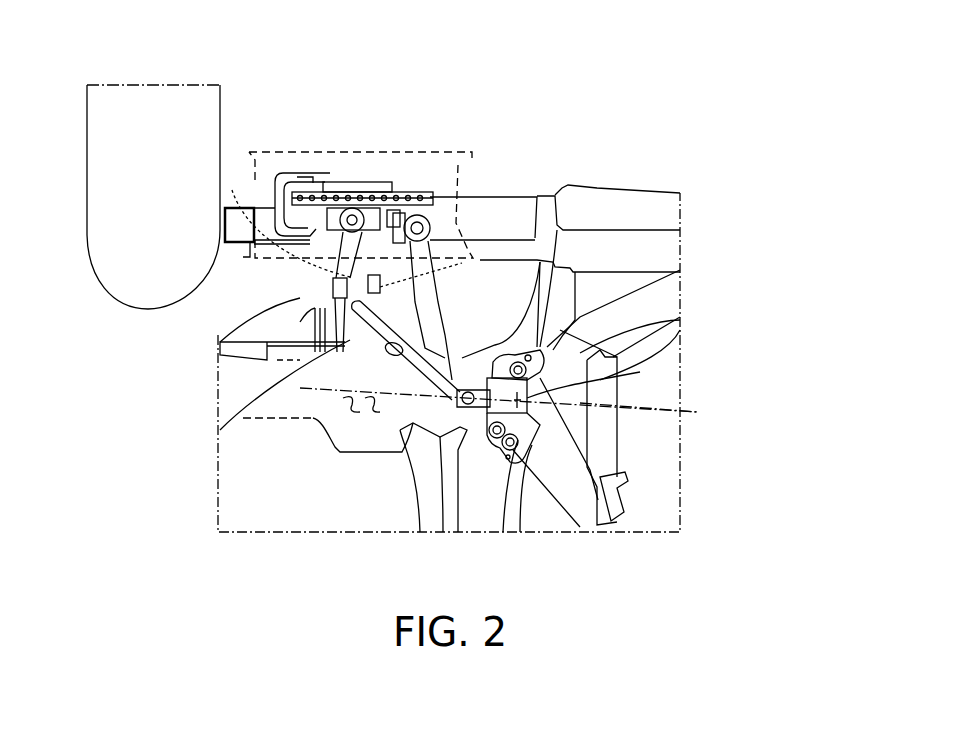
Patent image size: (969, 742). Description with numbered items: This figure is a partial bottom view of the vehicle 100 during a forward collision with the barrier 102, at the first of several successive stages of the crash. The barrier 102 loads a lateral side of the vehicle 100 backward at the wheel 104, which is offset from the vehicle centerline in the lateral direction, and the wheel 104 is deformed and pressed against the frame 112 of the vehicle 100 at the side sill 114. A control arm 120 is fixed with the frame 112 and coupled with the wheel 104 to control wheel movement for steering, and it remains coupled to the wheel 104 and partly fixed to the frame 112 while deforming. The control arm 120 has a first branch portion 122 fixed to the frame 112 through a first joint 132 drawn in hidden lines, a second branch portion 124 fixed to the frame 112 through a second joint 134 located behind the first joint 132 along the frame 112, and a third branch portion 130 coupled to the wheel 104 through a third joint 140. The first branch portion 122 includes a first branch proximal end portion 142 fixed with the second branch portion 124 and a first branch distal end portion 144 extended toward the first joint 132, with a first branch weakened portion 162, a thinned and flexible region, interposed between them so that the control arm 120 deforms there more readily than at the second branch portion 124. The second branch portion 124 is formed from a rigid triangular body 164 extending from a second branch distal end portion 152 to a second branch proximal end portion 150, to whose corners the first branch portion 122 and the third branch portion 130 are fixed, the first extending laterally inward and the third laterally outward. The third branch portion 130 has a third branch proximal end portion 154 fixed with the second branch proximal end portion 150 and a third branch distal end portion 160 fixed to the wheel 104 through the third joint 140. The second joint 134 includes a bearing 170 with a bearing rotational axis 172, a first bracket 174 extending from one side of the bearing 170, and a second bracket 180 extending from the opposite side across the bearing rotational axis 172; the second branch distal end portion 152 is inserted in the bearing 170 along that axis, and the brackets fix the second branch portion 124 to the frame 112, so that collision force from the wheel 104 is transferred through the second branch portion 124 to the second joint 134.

The vehicle 100 is at (614, 70).
The barrier 102 is at (150, 108).
The wheel 104 is at (368, 152).
The frame 112 is at (667, 298).
The side sill 114 is at (615, 242).
The control arm 120 is at (225, 338).
The first branch portion 122 is at (350, 367).
The second branch portion 124 is at (417, 430).
The third branch portion 130 is at (445, 382).
The first joint 132 is at (400, 430).
The second joint 134 is at (527, 398).
The third joint 140 is at (392, 208).
The first branch proximal end portion 142 is at (350, 347).
The first branch distal end portion 144 is at (332, 452).
The second branch proximal end portion 150 is at (540, 262).
The second branch distal end portion 152 is at (487, 405).
The third branch proximal end portion 154 is at (337, 328).
The third branch distal end portion 160 is at (352, 252).
The first branch weakened portion 162 is at (348, 425).
The triangular body 164 is at (395, 325).
The bearing 170 is at (530, 400).
The bearing rotational axis 172 is at (697, 412).
The first bracket 174 is at (580, 353).
The second bracket 180 is at (530, 433).